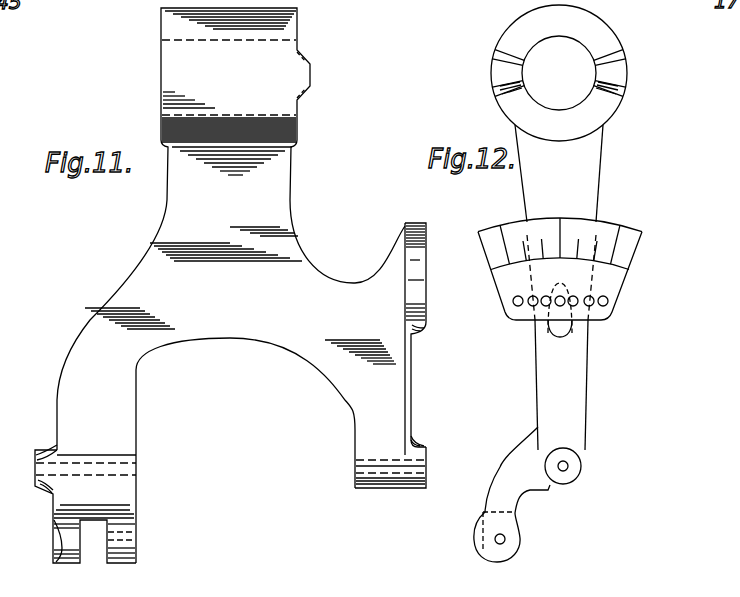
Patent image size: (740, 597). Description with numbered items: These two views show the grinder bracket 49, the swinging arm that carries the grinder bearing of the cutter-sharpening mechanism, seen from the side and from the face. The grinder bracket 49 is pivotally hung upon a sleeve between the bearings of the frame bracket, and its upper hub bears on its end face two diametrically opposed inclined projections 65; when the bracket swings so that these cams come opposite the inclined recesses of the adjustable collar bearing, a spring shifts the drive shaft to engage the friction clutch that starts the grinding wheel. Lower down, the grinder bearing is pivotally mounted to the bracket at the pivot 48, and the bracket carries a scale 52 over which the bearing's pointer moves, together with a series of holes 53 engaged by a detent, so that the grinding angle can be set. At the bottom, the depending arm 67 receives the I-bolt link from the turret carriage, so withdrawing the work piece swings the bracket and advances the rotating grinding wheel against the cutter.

In FIG. 11, the pivot of grinder bearing 48 is at (427, 468).
In FIG. 12, the pivot of grinder bearing 48 is at (570, 472).
In FIG. 11, the grinder bracket 49 is at (231, 285).
In FIG. 12, the grinder bracket 49 is at (575, 382).
In FIG. 11, the scale 52 is at (419, 222).
In FIG. 12, the scale 52 is at (603, 223).
In FIG. 12, the series of holes 53 is at (517, 306).
In FIG. 11, the inclined projections 65 is at (310, 75).
In FIG. 12, the inclined projections 65 is at (494, 76).
In FIG. 11, the depending arm 67 is at (120, 505).
In FIG. 12, the depending arm 67 is at (503, 473).